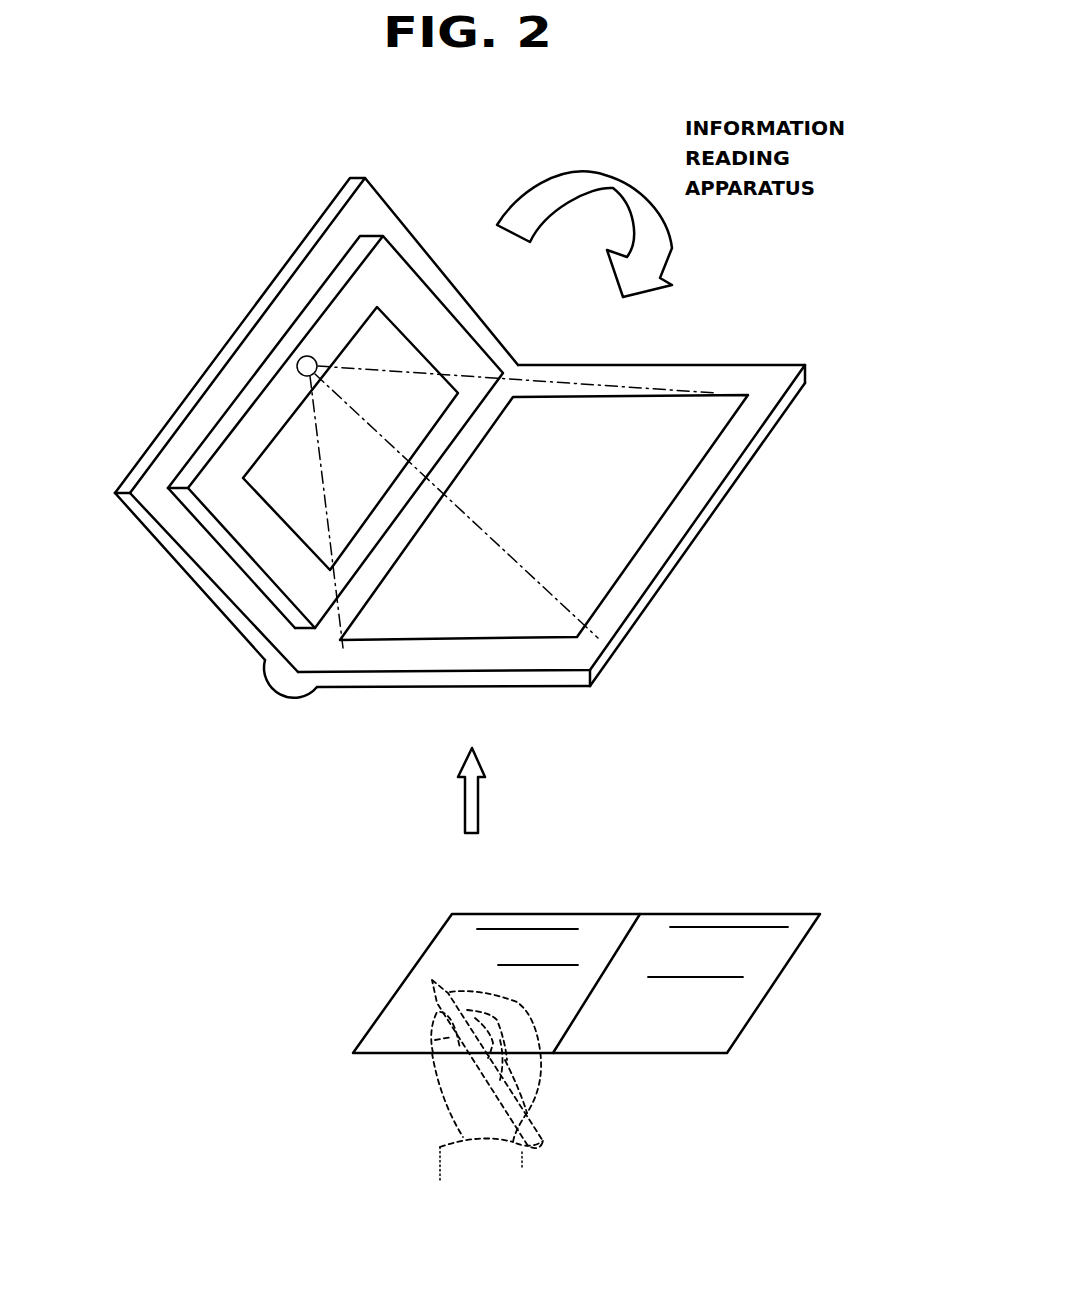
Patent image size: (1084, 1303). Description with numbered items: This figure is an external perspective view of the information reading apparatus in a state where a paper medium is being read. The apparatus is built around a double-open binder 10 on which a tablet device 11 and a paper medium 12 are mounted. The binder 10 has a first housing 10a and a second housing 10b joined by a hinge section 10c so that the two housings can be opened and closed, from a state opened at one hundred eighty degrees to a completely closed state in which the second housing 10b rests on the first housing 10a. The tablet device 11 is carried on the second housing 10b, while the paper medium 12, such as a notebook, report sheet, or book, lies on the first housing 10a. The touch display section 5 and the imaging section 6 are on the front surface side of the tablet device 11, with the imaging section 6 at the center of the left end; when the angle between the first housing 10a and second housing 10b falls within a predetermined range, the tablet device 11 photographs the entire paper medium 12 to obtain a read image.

The touch display section 5 is at (388, 347).
The imaging section 6 is at (227, 286).
The binder 10 is at (462, 496).
The first housing 10a is at (605, 663).
The second housing 10b is at (165, 555).
The hinge section 10c is at (281, 737).
The tablet device 11 is at (306, 418).
The paper medium 12 is at (588, 913).